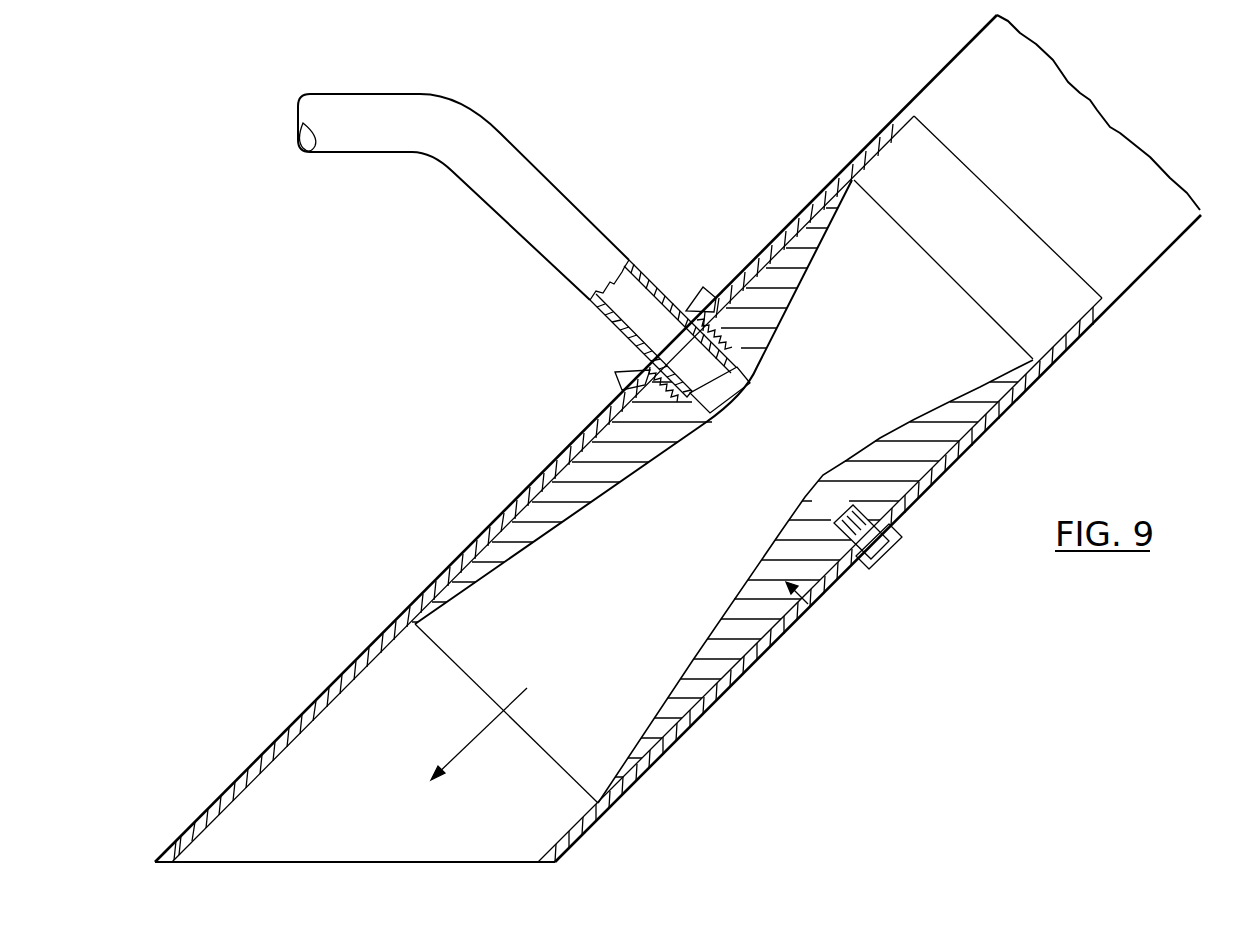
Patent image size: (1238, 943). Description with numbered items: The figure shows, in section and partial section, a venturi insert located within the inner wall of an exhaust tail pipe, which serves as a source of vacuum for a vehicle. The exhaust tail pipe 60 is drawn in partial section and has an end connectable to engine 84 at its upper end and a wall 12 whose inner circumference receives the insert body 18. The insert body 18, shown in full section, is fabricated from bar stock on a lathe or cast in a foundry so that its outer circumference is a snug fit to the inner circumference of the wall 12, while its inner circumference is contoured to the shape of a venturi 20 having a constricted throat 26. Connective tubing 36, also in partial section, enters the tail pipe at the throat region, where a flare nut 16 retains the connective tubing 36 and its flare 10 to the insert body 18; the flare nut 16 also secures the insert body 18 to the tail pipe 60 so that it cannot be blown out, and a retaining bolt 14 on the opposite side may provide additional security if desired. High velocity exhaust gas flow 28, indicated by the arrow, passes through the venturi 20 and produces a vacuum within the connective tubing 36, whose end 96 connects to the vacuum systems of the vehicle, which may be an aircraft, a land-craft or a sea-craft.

The flare 10 is at (758, 361).
The wall 12 is at (1080, 327).
The retaining bolt 14 is at (885, 545).
The flare nut 16 is at (700, 290).
The insert body 18 is at (915, 468).
The venturi 20 is at (808, 604).
The constricted throat 26 is at (617, 412).
The exhaust gas flow 28 is at (457, 753).
The connective tubing 36 is at (490, 122).
The exhaust tail pipe 60 is at (942, 63).
The end connectable to engine 84 is at (1090, 100).
The end 96 is at (302, 113).